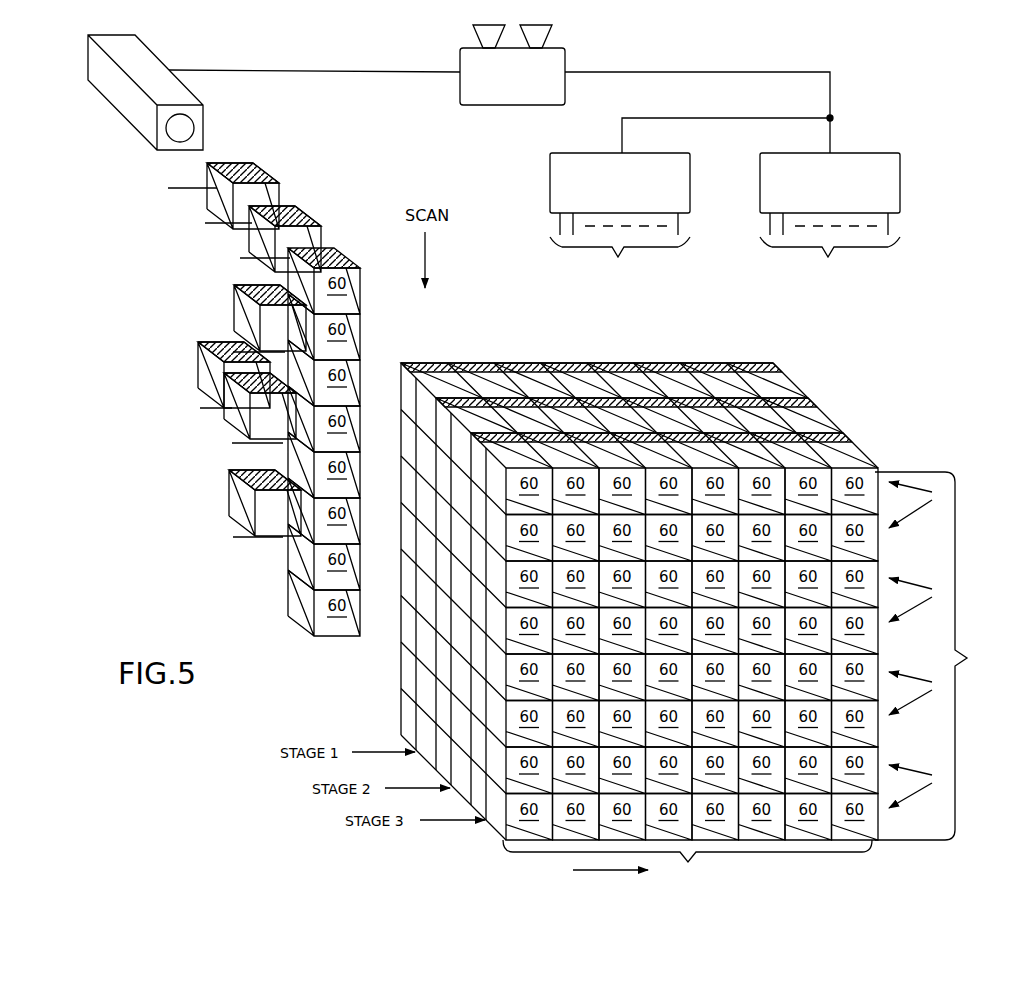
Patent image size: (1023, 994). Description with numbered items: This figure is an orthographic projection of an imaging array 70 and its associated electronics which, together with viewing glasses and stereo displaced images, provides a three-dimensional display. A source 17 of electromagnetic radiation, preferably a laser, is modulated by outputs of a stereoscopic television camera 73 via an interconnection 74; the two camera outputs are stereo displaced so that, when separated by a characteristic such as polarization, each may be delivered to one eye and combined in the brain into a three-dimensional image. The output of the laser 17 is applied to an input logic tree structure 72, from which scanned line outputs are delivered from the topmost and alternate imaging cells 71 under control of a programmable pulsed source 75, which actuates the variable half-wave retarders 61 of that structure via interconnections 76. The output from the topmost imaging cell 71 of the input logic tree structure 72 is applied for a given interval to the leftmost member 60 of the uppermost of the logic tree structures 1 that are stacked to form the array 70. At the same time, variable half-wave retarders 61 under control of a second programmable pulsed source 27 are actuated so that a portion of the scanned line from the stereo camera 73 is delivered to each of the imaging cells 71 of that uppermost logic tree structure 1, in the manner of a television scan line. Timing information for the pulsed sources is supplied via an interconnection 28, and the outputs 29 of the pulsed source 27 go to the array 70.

The logic tree structure 1 is at (918, 645).
The source of electromagnetic radiation 17 is at (113, 98).
The programmable pulsed source 27 is at (900, 186).
The interconnection 28 is at (838, 105).
The pulses to array 29 is at (830, 250).
The half-wave retarder 60 is at (492, 385).
The variable half-wave retarder 61 is at (443, 372).
The array 70 is at (580, 503).
The imaging cell 71 is at (362, 302).
The input logic tree structure 72 is at (284, 392).
The stereoscopic television camera 73 is at (518, 108).
The interconnection 74 is at (330, 72).
The programmable pulsed source 75 is at (550, 186).
The interconnection 76 is at (205, 186).